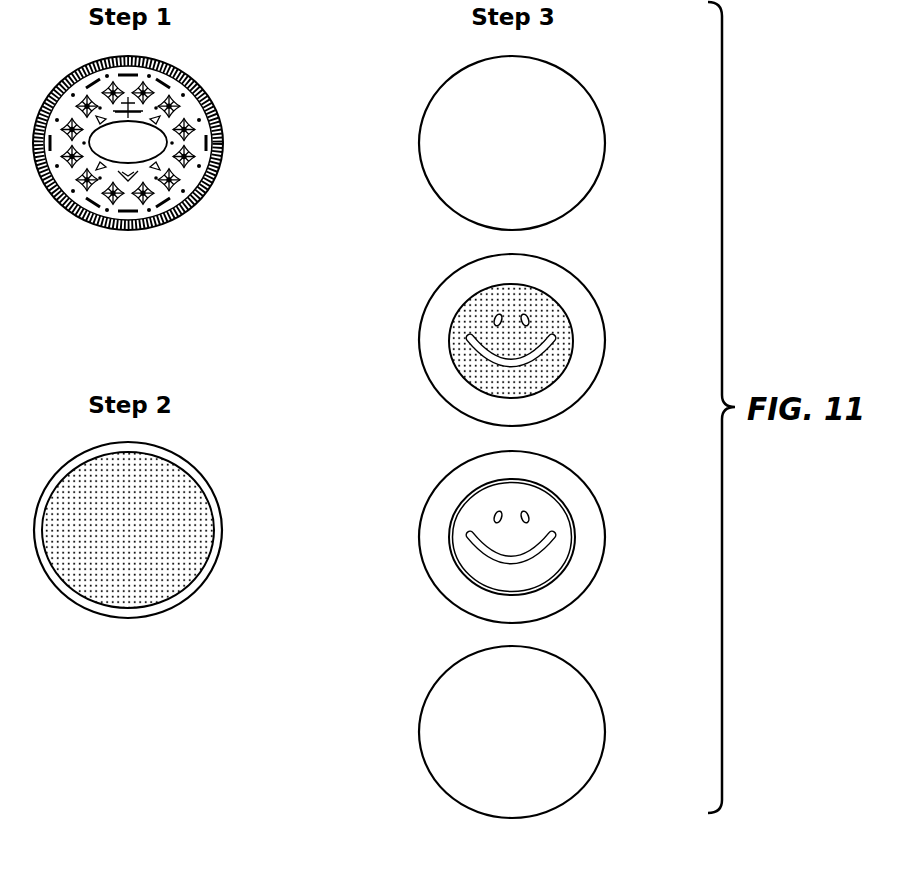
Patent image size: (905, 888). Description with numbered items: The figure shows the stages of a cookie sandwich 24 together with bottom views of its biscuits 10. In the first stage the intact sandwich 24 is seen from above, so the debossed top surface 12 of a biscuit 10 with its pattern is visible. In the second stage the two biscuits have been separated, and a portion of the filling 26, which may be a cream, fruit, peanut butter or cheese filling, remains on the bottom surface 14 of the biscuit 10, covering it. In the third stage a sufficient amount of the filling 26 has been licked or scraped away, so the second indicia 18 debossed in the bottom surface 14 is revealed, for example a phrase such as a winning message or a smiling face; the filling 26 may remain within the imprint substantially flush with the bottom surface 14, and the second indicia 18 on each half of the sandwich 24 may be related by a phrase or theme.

The biscuit 10 is at (220, 115).
The top surface 12 is at (186, 139).
The bottom surface 14 is at (220, 525).
The second indicia 18 is at (563, 117).
The sandwich 24 is at (203, 58).
The filling 26 is at (191, 543).